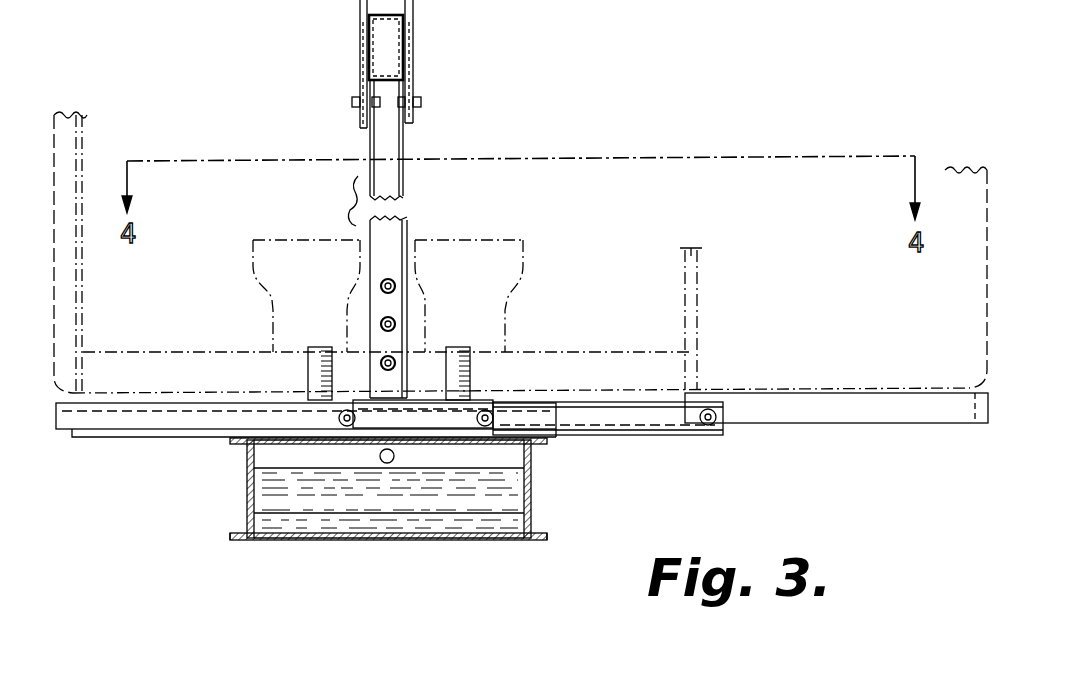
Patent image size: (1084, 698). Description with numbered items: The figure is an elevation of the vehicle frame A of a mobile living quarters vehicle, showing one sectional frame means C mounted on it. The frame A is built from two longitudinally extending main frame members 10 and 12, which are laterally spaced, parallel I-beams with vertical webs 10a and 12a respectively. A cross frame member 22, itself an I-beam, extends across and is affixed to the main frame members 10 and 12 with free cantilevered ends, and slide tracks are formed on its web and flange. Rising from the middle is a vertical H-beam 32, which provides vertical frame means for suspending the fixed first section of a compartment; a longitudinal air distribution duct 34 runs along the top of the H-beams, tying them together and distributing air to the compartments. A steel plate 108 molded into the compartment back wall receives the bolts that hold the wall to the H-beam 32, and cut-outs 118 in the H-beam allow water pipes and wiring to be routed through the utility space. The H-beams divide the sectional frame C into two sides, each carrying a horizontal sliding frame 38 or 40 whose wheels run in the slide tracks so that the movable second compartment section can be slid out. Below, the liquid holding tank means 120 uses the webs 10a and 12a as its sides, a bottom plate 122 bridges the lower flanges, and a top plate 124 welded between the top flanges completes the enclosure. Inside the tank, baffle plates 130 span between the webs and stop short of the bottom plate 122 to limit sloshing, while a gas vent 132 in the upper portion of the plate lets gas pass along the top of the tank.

The main frame member 10 is at (520, 542).
The vertical web 10a is at (532, 488).
The main frame member 12 is at (250, 543).
The vertical web 12a is at (246, 477).
The cross frame member 22 is at (633, 436).
The vertical H-beam 32 is at (405, 176).
The longitudinal air distribution duct 34 is at (403, 20).
The horizontal sliding frame 38 is at (882, 410).
The horizontal sliding frame 40 is at (128, 422).
The steel plate 108 is at (412, 85).
The cut-outs 118 is at (394, 363).
The liquid holding tank means 120 is at (365, 513).
The bottom plate 122 is at (407, 540).
The top plate 124 is at (283, 437).
The baffle plates 130 is at (347, 503).
The gas vent 132 is at (395, 456).
The vehicle frame A is at (247, 502).
The sectional frame means C is at (686, 436).